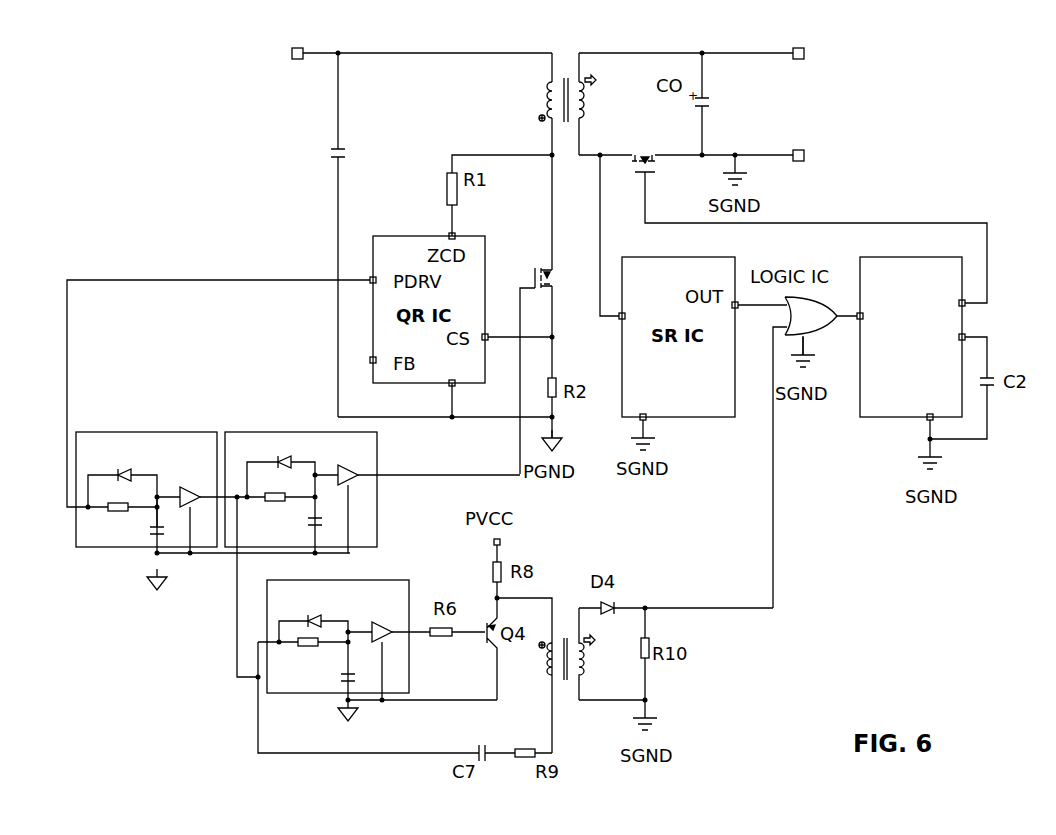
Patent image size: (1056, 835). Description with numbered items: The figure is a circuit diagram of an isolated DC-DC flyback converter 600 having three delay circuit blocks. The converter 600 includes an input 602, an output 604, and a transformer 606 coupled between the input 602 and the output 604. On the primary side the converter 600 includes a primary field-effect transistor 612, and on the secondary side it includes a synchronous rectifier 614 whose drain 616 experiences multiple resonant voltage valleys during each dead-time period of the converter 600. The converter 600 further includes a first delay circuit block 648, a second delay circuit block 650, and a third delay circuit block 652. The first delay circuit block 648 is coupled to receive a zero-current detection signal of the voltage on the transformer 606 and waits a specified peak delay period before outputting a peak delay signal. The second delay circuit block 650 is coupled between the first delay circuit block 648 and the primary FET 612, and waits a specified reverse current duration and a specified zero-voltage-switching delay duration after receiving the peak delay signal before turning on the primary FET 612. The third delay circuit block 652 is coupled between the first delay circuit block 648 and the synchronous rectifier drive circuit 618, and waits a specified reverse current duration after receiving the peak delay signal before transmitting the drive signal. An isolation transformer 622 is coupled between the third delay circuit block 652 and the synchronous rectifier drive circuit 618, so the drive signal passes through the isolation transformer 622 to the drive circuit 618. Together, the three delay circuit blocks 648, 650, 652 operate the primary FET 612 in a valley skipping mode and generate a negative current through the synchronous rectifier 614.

The isolated DC-DC flyback converter 600 is at (898, 65).
The input 602 is at (296, 47).
The output 604 is at (796, 47).
The transformer 606 is at (562, 60).
The primary field-effect transistor (FET) 612 is at (532, 266).
The synchronous rectifier 614 is at (641, 140).
The drain 616 is at (630, 162).
The synchronous rectifier drive circuit 618 is at (876, 420).
The isolation transformer 622 is at (557, 638).
The first delay circuit block 648 is at (82, 548).
The second delay circuit block 650 is at (379, 455).
The third delay circuit block 652 is at (409, 579).